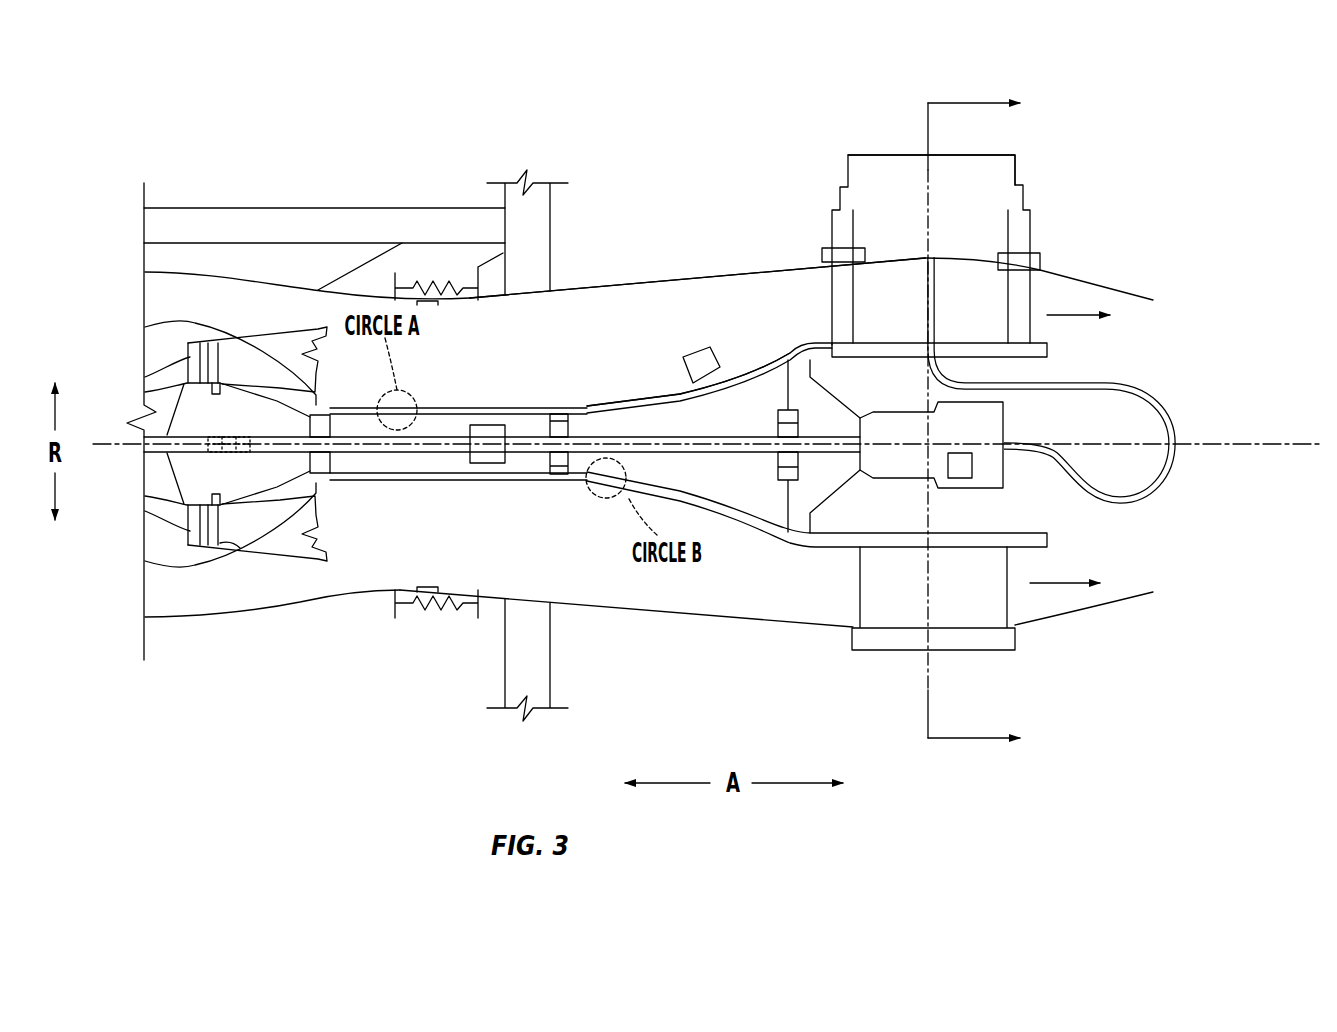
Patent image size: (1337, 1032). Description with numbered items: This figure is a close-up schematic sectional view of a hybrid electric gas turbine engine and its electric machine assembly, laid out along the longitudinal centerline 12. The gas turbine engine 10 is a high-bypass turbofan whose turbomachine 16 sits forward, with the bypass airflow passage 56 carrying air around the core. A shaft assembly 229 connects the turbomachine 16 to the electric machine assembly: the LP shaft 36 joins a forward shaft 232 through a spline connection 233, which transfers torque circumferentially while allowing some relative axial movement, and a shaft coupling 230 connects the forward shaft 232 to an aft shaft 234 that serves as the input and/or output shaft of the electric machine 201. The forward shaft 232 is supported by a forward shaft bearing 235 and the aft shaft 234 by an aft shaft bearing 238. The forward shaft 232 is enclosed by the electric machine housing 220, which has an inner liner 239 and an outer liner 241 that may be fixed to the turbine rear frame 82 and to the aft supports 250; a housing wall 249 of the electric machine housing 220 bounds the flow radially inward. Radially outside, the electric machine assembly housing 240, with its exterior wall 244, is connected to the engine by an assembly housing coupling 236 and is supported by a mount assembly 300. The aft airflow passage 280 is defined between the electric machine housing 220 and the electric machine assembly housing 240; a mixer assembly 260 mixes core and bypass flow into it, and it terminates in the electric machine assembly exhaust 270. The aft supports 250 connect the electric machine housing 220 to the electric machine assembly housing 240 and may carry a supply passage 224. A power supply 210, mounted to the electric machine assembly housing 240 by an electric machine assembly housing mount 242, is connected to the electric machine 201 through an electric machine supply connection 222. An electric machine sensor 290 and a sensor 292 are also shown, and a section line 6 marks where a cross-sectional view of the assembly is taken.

The gas turbine engine 10 is at (188, 262).
The longitudinal centerline 12 is at (1222, 440).
The turbomachine 16 is at (143, 343).
The LP shaft 36 is at (194, 437).
The bypass airflow passage 56 is at (250, 316).
The turbine rear frame 82 is at (238, 550).
The electric machine 201 is at (1003, 468).
The power supply 210 is at (1013, 197).
The electric machine housing 220 is at (648, 380).
The electric machine supply connection 222 is at (1137, 393).
The supply passage 224 is at (878, 235).
The shaft assembly 229 is at (427, 462).
The shaft coupling 230 is at (496, 425).
The forward shaft 232 is at (357, 435).
The spline connection 233 is at (240, 458).
The aft shaft 234 is at (600, 406).
The forward shaft bearing 235 is at (333, 458).
The assembly housing coupling 236 is at (432, 268).
The aft shaft bearing 238 is at (560, 472).
The inner liner 239 is at (429, 407).
The electric machine assembly housing 240 is at (673, 275).
The outer liner 241 is at (473, 407).
The electric machine assembly housing mount 242 is at (1027, 242).
The exterior wall 244 is at (697, 252).
The housing wall 249 is at (748, 355).
The aft supports 250 is at (842, 303).
The mixer assembly 260 is at (302, 568).
The electric machine assembly exhaust 270 is at (1070, 313).
The aft airflow passage 280 is at (556, 339).
The electric machine sensor 290 is at (960, 470).
The sensor 292 is at (703, 360).
The mount assembly 300 is at (335, 175).
The section line 6 is at (985, 421).